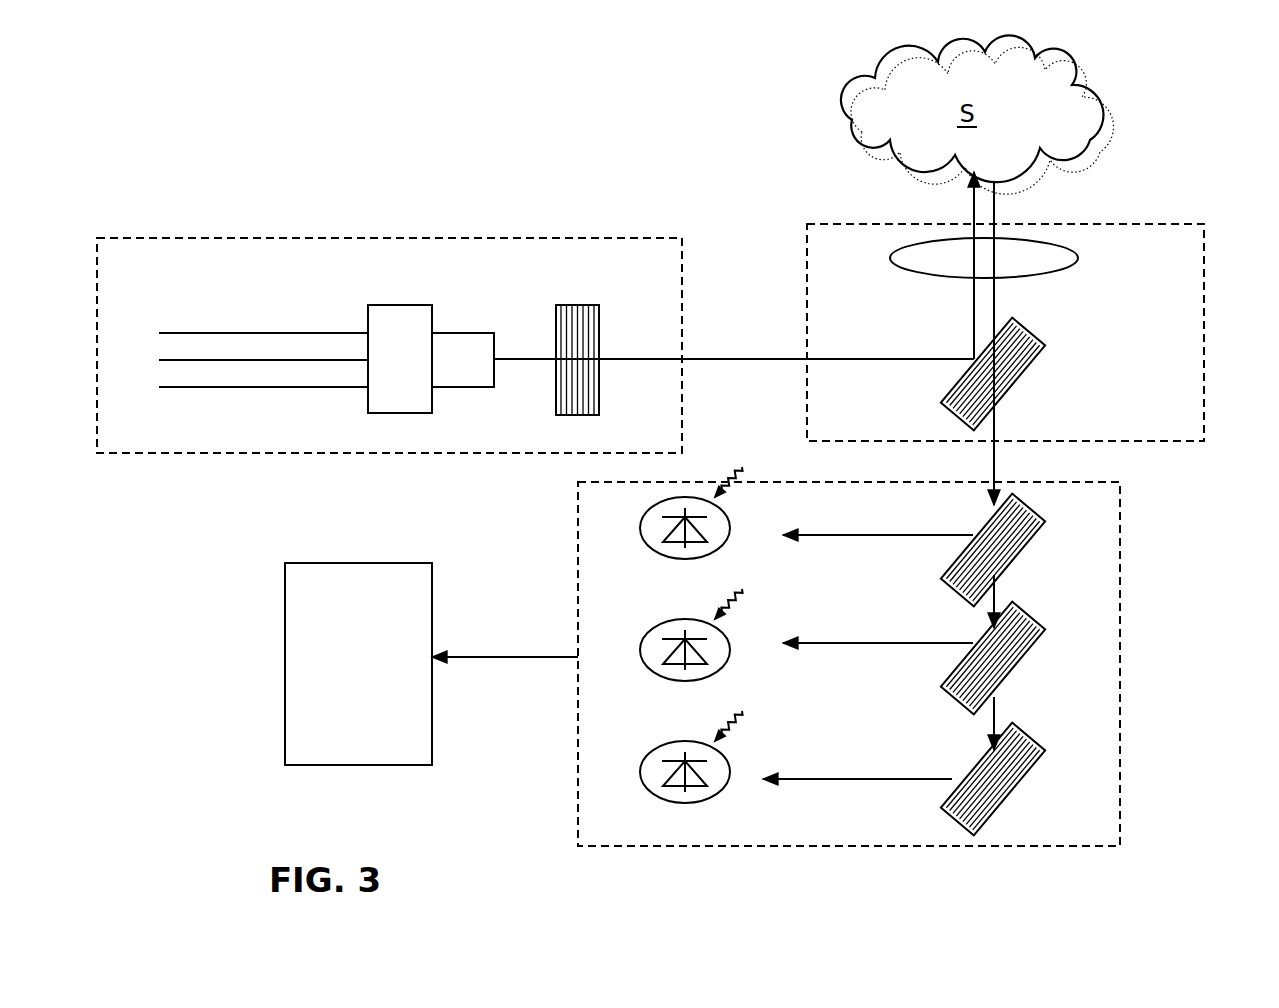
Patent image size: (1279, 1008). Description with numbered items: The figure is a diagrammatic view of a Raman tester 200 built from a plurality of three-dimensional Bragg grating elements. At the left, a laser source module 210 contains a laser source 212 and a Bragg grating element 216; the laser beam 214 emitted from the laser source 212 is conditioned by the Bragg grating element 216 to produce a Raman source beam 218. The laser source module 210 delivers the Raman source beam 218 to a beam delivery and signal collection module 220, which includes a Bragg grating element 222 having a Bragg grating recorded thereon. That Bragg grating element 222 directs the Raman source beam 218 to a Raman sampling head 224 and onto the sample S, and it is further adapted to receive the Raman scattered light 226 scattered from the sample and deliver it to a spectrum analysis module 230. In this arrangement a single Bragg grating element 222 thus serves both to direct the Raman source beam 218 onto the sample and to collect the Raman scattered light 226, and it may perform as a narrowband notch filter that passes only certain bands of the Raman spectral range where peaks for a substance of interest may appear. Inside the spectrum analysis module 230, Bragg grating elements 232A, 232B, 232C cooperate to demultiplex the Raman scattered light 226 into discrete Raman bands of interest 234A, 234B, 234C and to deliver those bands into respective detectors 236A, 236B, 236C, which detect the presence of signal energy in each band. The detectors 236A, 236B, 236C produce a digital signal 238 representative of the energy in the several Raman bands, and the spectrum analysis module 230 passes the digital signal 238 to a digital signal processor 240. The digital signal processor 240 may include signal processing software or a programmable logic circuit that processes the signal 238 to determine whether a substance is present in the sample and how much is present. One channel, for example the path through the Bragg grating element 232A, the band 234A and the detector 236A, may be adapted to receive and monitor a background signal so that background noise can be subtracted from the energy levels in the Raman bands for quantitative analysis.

The Raman tester 200 is at (473, 132).
The laser source module 210 is at (132, 280).
The laser source 212 is at (388, 328).
The laser beam 214 is at (522, 357).
The Bragg grating element 216 is at (555, 353).
The Raman source beam 218 is at (731, 359).
The beam delivery and signal collection module 220 is at (1127, 268).
The Bragg grating element 222 is at (1023, 370).
The Raman sampling head 224 is at (925, 240).
The Raman scattered light 226 is at (997, 215).
The spectrum analysis module 230 is at (1044, 831).
The Bragg grating element 232A is at (1022, 537).
The Bragg grating element 232B is at (1037, 640).
The Bragg grating element 232C is at (1025, 753).
The Raman band of interest 234A is at (870, 537).
The Raman band of interest 234B is at (869, 645).
The Raman band of interest 234C is at (842, 782).
The detector 236A is at (648, 537).
The detector 236B is at (645, 668).
The detector 236C is at (648, 770).
The digital signal 238 is at (480, 657).
The digital signal processor 240 is at (347, 678).